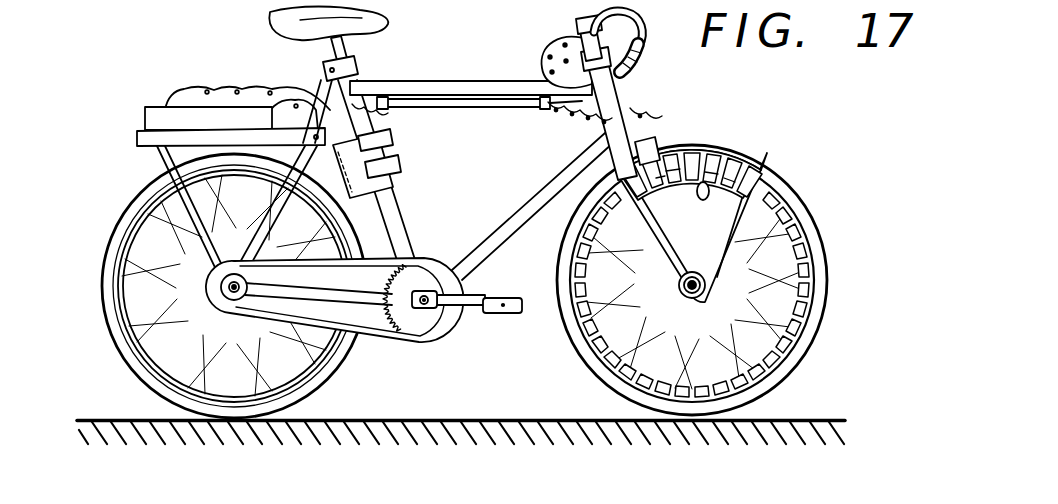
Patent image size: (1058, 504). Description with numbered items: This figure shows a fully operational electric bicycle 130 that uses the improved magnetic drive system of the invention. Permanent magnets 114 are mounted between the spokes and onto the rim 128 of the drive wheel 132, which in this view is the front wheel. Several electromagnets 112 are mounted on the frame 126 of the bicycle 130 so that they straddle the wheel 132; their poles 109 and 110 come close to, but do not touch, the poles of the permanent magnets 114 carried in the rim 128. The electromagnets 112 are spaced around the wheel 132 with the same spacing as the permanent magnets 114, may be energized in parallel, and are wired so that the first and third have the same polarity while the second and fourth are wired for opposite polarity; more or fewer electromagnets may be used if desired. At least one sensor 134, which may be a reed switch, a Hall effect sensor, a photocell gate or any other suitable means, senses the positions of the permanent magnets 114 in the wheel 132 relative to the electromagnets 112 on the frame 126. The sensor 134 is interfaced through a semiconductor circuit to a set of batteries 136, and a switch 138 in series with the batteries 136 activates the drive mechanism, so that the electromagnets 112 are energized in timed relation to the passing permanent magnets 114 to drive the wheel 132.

The pole 109 is at (721, 128).
The pole 110 is at (722, 160).
The electromagnets 112 is at (735, 178).
The permanent magnets 114 is at (778, 200).
The frame 126 is at (632, 86).
The rim 128 is at (559, 207).
The bicycle 130 is at (481, 82).
The drive wheel 132 is at (767, 188).
The sensor 134 is at (394, 153).
The batteries 136 is at (158, 122).
The switch 138 is at (580, 30).